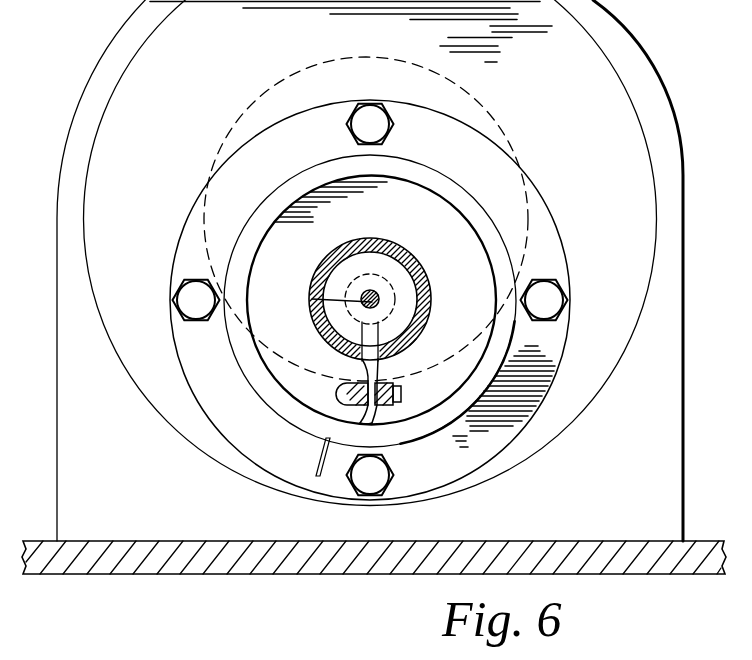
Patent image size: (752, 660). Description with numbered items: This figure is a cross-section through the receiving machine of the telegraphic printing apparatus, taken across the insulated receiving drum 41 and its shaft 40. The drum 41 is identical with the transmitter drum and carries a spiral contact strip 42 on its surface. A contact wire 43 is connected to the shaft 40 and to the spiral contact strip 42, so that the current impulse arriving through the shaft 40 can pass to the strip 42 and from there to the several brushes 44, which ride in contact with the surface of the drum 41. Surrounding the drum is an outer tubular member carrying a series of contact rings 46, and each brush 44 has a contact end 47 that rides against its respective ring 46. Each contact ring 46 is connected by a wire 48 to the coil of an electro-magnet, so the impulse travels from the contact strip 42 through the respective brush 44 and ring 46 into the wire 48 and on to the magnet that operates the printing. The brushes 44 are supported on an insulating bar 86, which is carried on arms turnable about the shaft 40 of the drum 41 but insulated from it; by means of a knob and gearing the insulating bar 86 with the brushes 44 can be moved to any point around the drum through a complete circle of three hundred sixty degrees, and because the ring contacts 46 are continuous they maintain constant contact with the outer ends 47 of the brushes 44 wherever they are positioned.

The shaft 40 is at (379, 302).
The receiving drum 41 is at (421, 286).
The spiral contact strip 42 is at (312, 299).
The contact wire 43 is at (334, 308).
The brush 44 is at (362, 371).
The contact ring 46 is at (249, 261).
The contact end 47 is at (358, 416).
The wire 48 is at (321, 457).
The insulating bar 86 is at (385, 411).